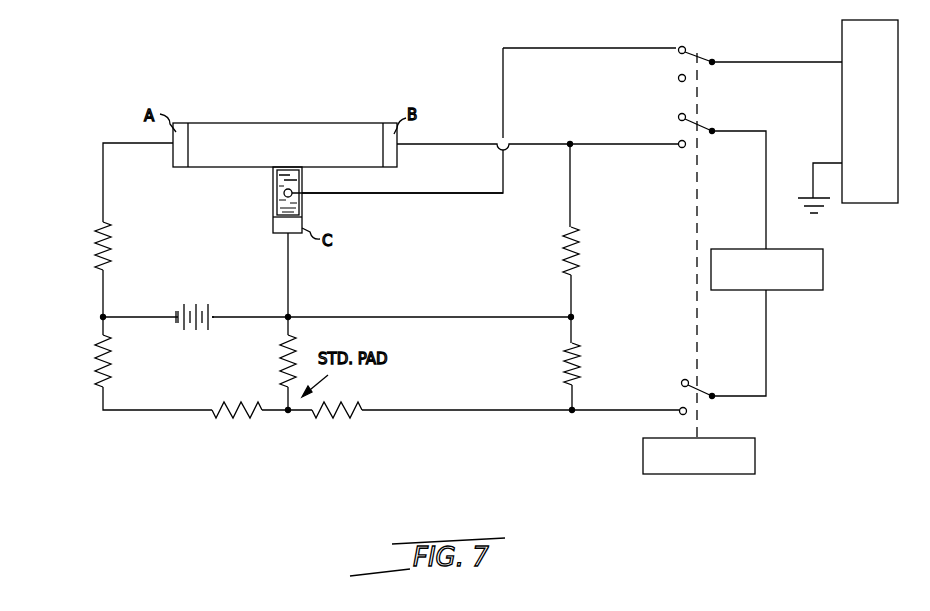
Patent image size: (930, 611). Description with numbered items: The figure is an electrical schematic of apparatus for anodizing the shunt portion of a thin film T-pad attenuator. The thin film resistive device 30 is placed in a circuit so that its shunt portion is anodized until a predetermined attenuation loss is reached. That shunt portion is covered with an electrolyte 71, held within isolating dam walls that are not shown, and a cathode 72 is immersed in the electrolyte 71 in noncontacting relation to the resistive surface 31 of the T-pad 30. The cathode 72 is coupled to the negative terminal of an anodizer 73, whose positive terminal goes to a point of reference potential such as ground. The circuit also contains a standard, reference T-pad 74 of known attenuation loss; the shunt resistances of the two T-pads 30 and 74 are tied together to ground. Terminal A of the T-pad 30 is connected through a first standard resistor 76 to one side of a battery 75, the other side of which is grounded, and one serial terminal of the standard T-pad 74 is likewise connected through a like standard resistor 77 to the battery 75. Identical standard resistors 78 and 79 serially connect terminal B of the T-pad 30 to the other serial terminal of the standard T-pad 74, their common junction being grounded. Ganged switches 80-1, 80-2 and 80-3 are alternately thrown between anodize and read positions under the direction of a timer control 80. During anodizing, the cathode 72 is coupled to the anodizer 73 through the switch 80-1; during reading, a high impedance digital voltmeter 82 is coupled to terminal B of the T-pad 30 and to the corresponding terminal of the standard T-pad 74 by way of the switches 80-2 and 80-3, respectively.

The thin film resistive device 30 is at (266, 185).
The resistive surface 31 is at (235, 123).
The electrolyte 71 is at (293, 186).
The cathode 72 is at (292, 199).
The anodizer 73 is at (842, 103).
The standard reference T-pad 74 is at (286, 415).
The battery 75 is at (185, 303).
The first standard resistor 76 is at (112, 249).
The standard resistor 77 is at (113, 379).
The standard resistor 78 is at (566, 250).
The standard resistor 79 is at (563, 360).
The timer control 80 is at (643, 452).
The switch 80-1 is at (690, 53).
The switch 80-2 is at (698, 127).
The switch 80-3 is at (700, 393).
The digital voltmeter 82 is at (824, 268).